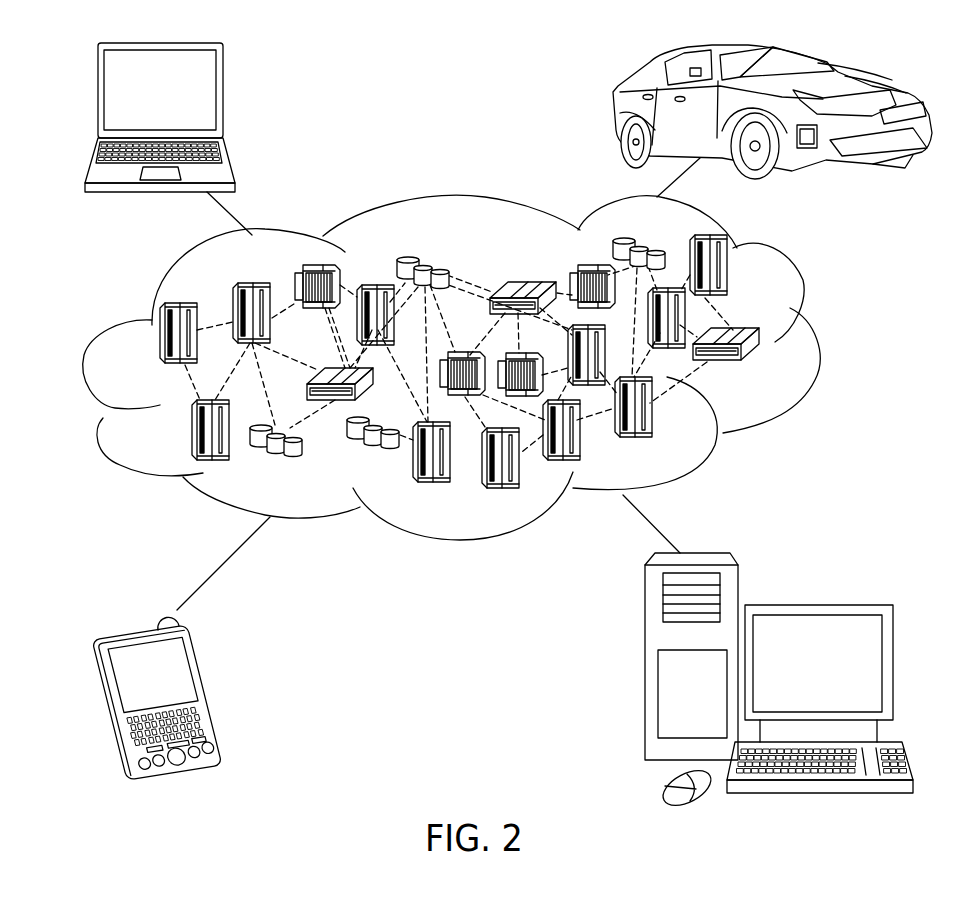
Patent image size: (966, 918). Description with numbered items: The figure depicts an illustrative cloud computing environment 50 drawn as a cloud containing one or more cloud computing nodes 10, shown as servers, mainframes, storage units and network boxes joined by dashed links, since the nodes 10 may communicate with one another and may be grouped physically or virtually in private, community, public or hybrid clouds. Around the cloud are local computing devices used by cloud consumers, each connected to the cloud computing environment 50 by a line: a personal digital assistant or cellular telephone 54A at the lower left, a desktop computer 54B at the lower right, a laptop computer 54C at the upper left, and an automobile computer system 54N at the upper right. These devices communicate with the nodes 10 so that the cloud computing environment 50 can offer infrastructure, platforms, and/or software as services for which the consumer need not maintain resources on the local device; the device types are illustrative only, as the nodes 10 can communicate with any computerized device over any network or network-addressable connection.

The cloud computing node 10 is at (765, 372).
The cloud computing environment 50 is at (818, 343).
The personal digital assistant or cellular telephone 54A is at (213, 687).
The desktop computer 54B is at (816, 604).
The laptop computer 54C is at (223, 96).
The automobile computer system 54N is at (620, 112).